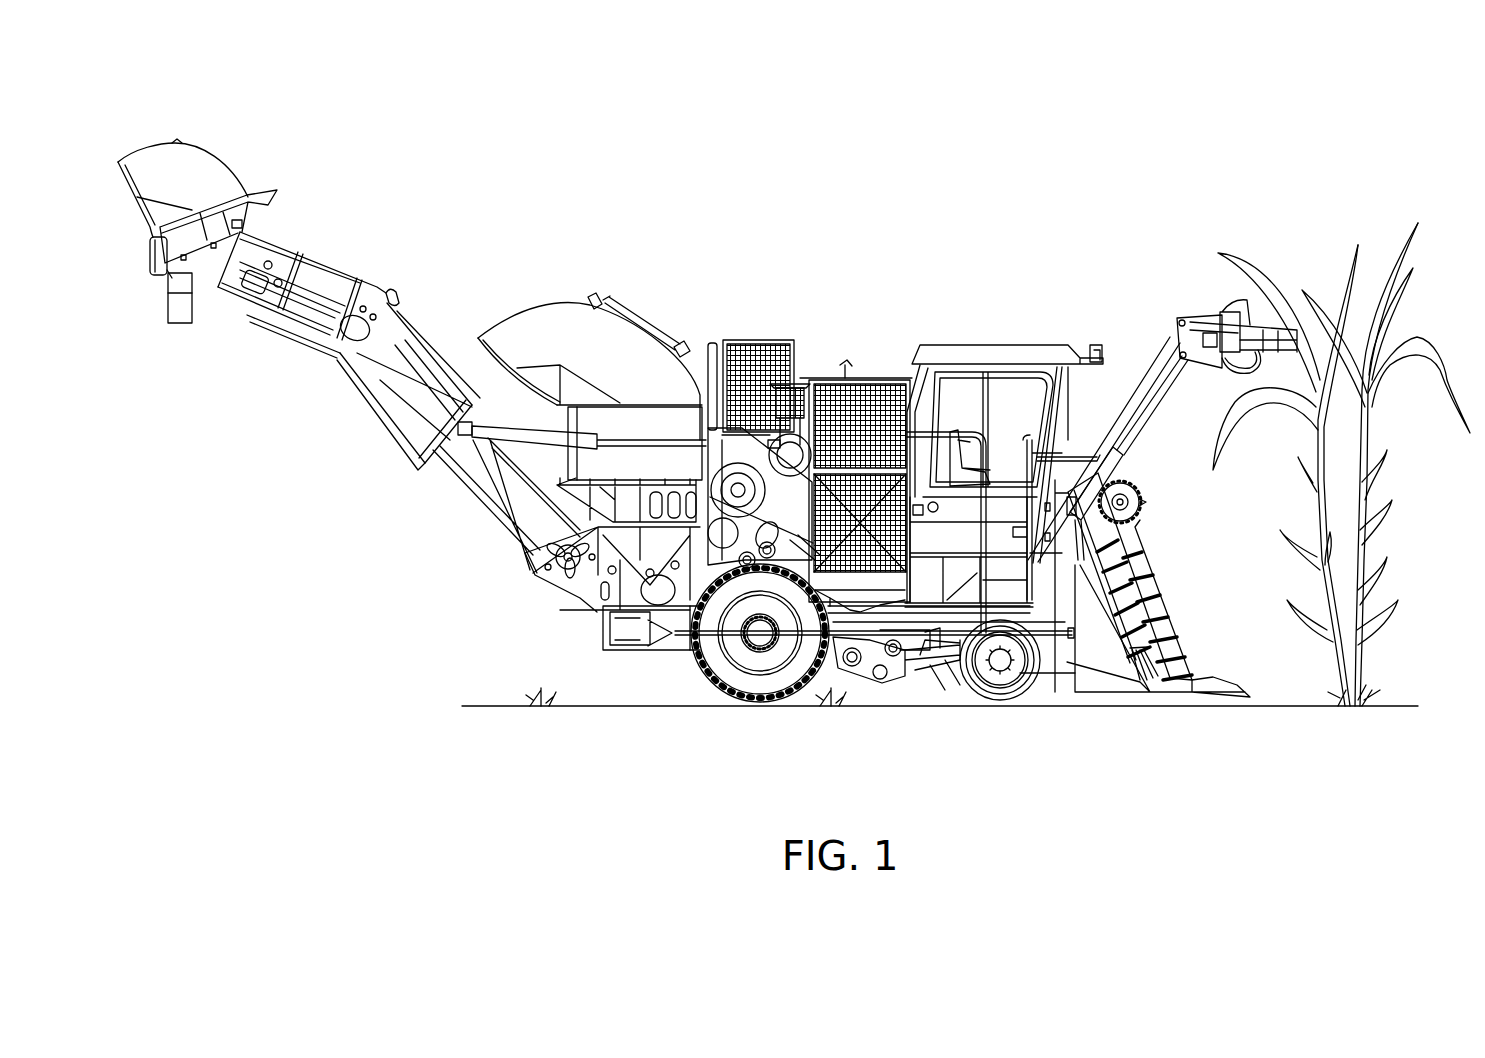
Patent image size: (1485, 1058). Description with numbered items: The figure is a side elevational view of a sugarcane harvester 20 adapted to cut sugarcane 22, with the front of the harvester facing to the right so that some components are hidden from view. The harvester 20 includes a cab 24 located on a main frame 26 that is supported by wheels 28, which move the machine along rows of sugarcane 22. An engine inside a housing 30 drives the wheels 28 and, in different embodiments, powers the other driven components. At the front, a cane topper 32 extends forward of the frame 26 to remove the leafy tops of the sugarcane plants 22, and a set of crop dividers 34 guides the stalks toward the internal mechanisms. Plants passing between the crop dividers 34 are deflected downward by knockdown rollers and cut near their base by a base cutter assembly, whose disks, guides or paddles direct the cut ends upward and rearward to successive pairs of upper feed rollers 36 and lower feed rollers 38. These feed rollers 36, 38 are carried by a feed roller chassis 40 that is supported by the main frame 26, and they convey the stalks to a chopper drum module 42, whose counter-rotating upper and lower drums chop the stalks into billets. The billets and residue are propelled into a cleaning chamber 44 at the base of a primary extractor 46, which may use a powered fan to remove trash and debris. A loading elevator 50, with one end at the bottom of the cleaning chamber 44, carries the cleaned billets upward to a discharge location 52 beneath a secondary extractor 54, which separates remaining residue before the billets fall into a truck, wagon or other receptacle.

The sugarcane harvester 20 is at (902, 247).
The sugarcane 22 is at (1352, 218).
The cab 24 is at (983, 353).
The main frame 26 is at (665, 672).
The wheels 28 is at (760, 685).
The housing 30 is at (862, 475).
The cane topper 32 is at (1227, 317).
The crop dividers 34 is at (1120, 648).
The upper feed rollers 36 is at (773, 533).
The lower feed rollers 38 is at (747, 562).
The feed roller chassis 40 is at (822, 597).
The chopper drum module 42 is at (713, 518).
The cleaning chamber 44 is at (610, 495).
The primary extractor 46 is at (508, 278).
The loading elevator 50 is at (345, 426).
The discharge location 52 is at (140, 258).
The secondary extractor 54 is at (200, 152).